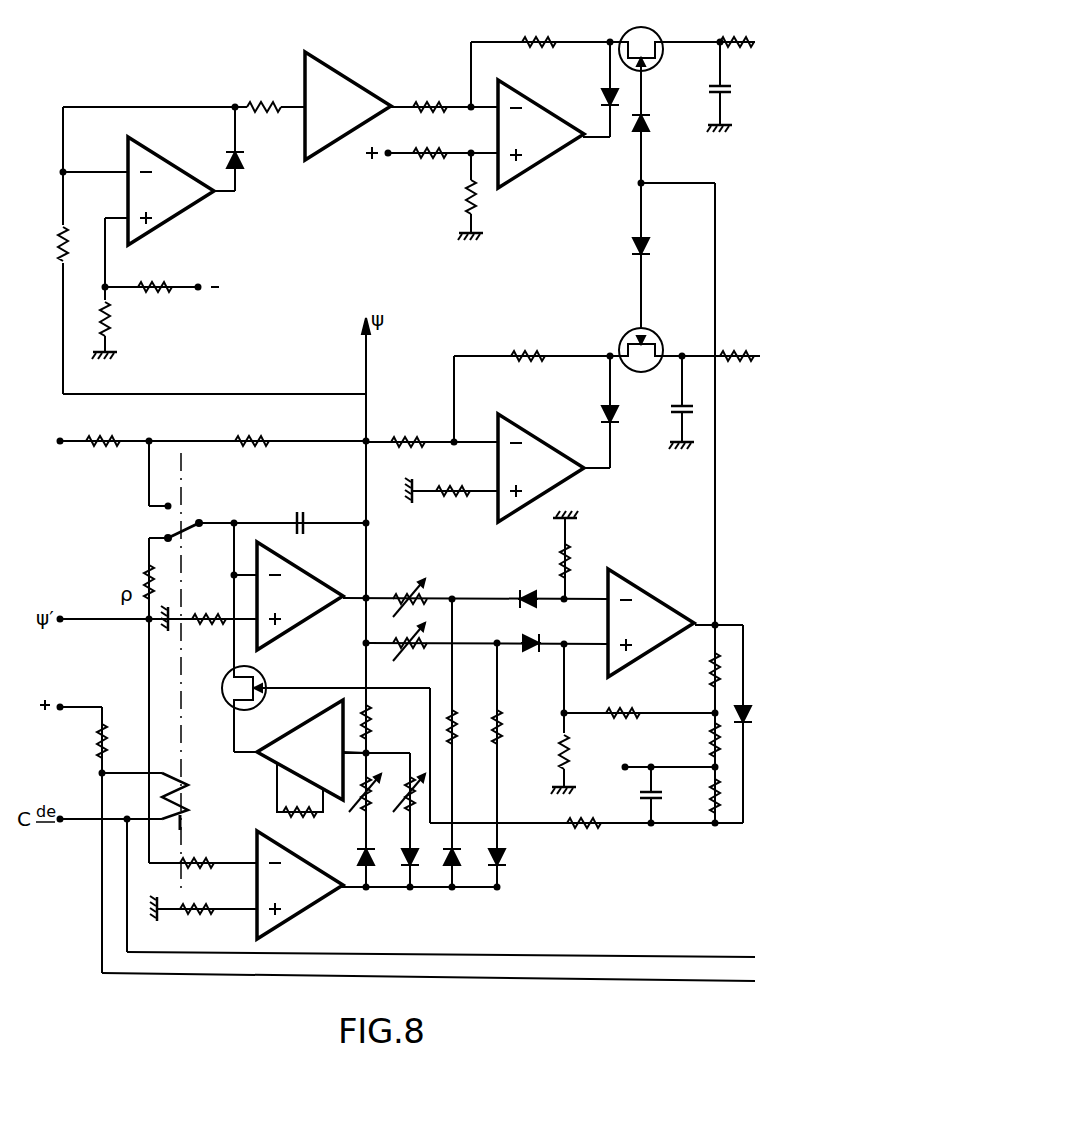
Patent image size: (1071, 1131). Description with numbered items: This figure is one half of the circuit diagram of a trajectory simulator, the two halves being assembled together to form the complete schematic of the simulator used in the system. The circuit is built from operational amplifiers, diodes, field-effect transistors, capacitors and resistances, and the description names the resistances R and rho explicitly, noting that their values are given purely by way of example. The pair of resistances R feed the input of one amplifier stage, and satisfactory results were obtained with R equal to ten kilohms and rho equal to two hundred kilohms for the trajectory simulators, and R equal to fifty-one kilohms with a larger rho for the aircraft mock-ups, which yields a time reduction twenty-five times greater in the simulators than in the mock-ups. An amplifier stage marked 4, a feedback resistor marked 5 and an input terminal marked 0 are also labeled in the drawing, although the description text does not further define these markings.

The inverting amplifier 4 is at (300, 750).
The feedback resistor 5 is at (308, 795).
The input terminal for signal -psi0 0 is at (53, 445).
The resistance R is at (226, 427).